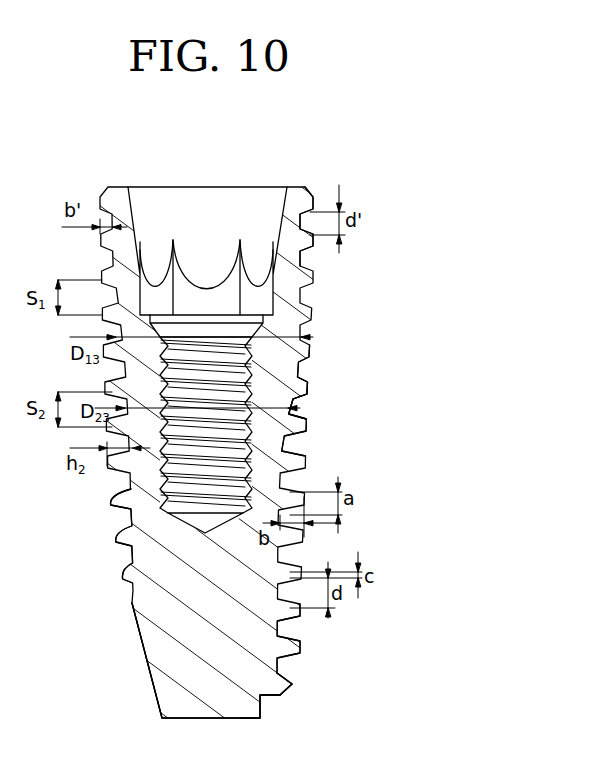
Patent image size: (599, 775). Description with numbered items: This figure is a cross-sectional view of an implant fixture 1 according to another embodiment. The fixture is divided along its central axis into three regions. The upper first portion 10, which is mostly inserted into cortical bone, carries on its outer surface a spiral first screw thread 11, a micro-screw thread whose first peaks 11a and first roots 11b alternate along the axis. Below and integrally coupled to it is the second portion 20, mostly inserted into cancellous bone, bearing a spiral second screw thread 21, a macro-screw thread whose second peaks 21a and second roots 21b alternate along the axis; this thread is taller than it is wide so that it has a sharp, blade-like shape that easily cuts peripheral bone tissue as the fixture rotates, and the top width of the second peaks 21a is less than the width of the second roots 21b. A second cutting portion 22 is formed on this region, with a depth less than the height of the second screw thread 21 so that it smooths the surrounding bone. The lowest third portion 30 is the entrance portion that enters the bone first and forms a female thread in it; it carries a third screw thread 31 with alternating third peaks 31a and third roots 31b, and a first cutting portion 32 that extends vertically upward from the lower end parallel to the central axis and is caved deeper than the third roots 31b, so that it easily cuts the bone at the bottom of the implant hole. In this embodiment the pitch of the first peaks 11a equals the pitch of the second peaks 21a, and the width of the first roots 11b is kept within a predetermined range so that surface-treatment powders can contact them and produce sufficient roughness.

The implant fixture 1 is at (488, 278).
The first portion 10 is at (307, 266).
The first screw thread 11 is at (300, 323).
The first peaks 11a is at (303, 283).
The first roots 11b is at (297, 260).
The second portion 20 is at (260, 460).
The second screw thread 21 is at (293, 428).
The second peaks 21a is at (307, 390).
The second roots 21b is at (308, 421).
The second cutting portion 22 is at (110, 502).
The third portion 30 is at (260, 663).
The third screw thread 31 is at (292, 661).
The third peaks 31a is at (277, 696).
The third roots 31b is at (287, 668).
The first cutting portion 32 is at (145, 648).